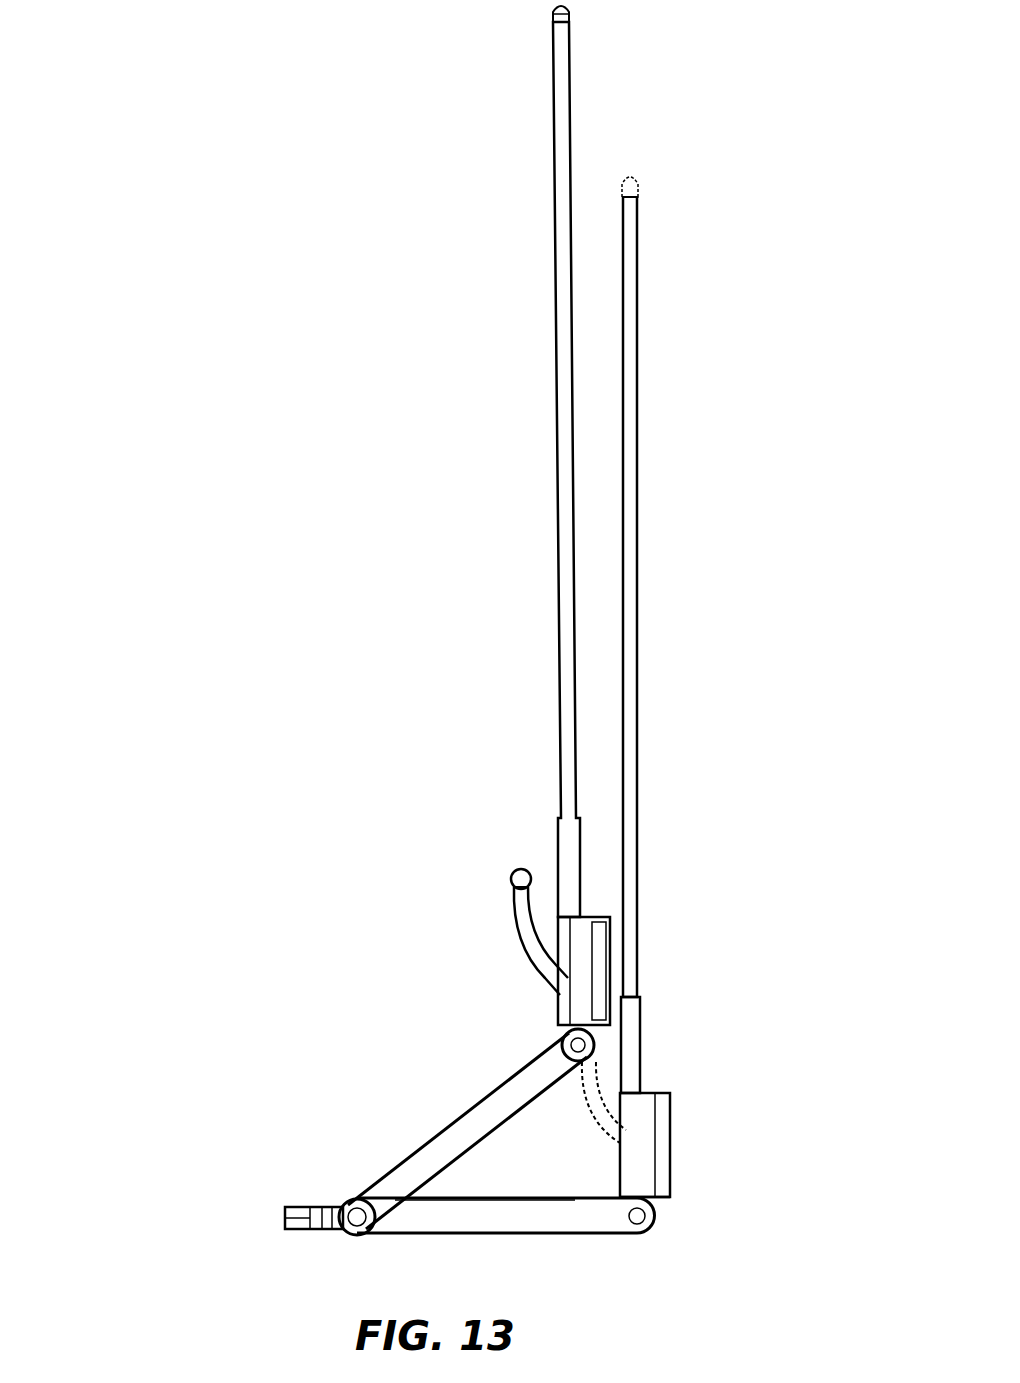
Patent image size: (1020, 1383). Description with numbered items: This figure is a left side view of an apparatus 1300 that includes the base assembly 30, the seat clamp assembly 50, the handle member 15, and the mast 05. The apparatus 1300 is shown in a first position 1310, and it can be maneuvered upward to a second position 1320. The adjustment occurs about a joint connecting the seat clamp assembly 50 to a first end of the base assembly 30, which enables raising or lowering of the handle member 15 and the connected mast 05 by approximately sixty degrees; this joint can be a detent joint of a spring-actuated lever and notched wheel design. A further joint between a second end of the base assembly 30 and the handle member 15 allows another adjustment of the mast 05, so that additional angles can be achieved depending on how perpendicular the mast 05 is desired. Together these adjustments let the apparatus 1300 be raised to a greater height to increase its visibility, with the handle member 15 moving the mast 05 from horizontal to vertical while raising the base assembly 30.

The apparatus 1300 is at (155, 57).
The second position 1320 is at (594, 52).
The first position 1310 is at (649, 162).
The mast 05 is at (667, 1075).
The handle member 15 is at (532, 978).
The base assembly 30 is at (450, 1110).
The seat clamp assembly 50 is at (293, 1205).